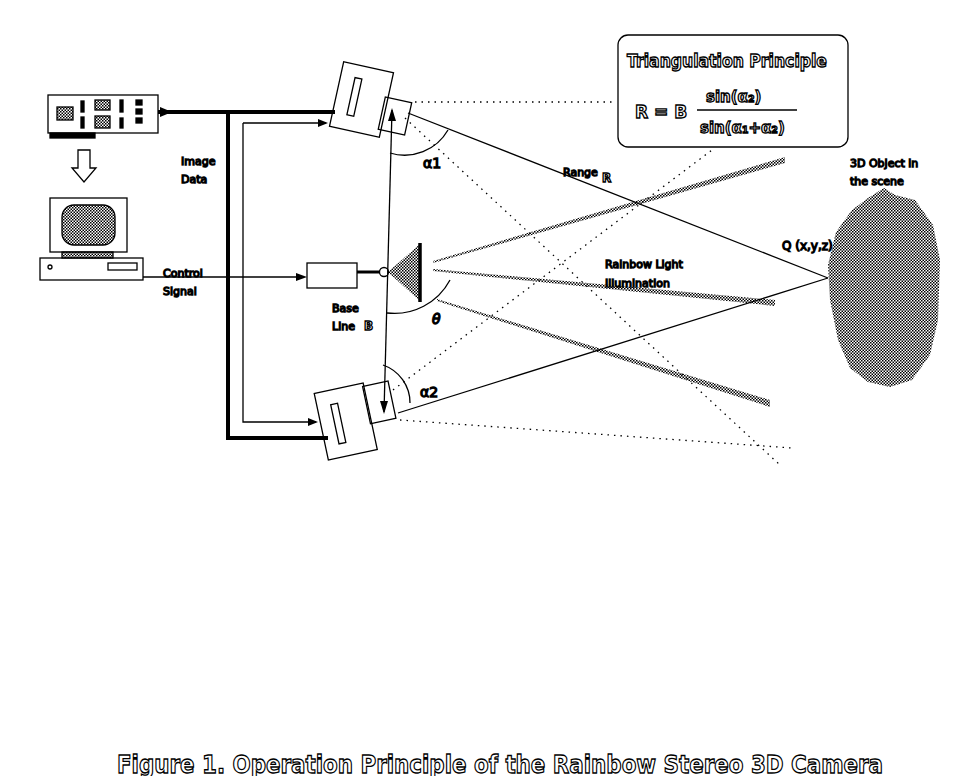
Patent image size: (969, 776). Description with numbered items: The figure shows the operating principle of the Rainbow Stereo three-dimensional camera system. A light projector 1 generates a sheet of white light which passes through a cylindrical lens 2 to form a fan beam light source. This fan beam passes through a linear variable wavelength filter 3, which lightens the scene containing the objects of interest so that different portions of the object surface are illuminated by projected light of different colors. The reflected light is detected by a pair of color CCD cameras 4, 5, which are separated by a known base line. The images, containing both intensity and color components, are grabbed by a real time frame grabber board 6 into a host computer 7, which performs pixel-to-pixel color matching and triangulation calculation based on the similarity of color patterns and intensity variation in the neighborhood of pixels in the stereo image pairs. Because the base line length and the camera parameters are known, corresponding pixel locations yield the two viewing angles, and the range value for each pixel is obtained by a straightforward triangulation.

The light projector 1 is at (307, 275).
The cylindrical lens 2 is at (352, 242).
The linear variable wavelength filter 3 is at (462, 248).
The color CCD camera 4 is at (350, 93).
The color CCD camera 5 is at (342, 412).
The real time frame grabber board 6 is at (136, 109).
The host computer 7 is at (97, 250).